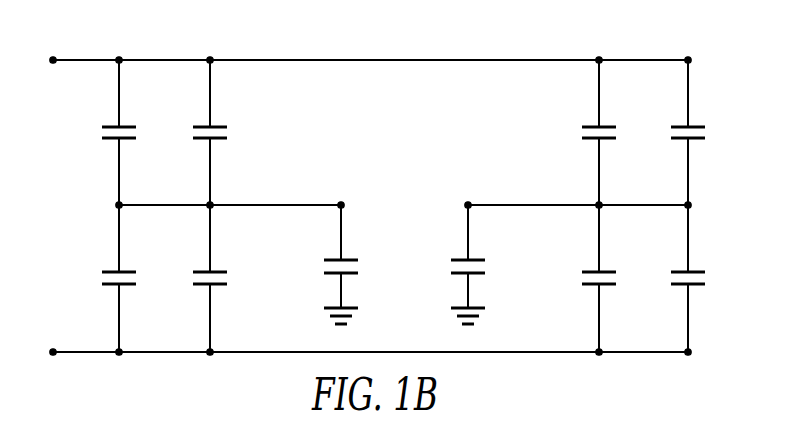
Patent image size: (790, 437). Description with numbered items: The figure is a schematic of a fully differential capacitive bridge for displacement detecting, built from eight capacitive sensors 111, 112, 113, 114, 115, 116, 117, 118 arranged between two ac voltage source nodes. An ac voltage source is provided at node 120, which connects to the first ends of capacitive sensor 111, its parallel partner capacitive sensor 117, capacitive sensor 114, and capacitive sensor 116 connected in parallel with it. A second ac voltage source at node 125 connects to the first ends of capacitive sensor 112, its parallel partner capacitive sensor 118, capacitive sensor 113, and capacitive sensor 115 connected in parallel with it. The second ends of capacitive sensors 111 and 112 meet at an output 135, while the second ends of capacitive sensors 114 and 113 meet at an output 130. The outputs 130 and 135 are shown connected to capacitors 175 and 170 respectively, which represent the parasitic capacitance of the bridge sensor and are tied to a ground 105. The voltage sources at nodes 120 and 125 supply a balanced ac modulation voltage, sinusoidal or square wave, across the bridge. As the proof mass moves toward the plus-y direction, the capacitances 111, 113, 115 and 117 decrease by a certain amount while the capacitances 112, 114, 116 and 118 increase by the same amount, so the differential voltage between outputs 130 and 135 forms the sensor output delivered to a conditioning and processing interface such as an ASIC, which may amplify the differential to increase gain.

The ground 105 is at (344, 308).
The capacitive sensor 111 is at (122, 124).
The capacitive sensor 112 is at (122, 270).
The capacitive sensor 113 is at (602, 270).
The capacitive sensor 114 is at (602, 124).
The capacitive sensor 115 is at (691, 270).
The capacitive sensor 116 is at (691, 124).
The capacitive sensor 117 is at (213, 124).
The capacitive sensor 118 is at (213, 270).
The node 120 is at (53, 60).
The node 125 is at (53, 352).
The output 130 is at (468, 205).
The output 135 is at (341, 205).
The capacitor 170 is at (344, 258).
The capacitor 175 is at (471, 258).